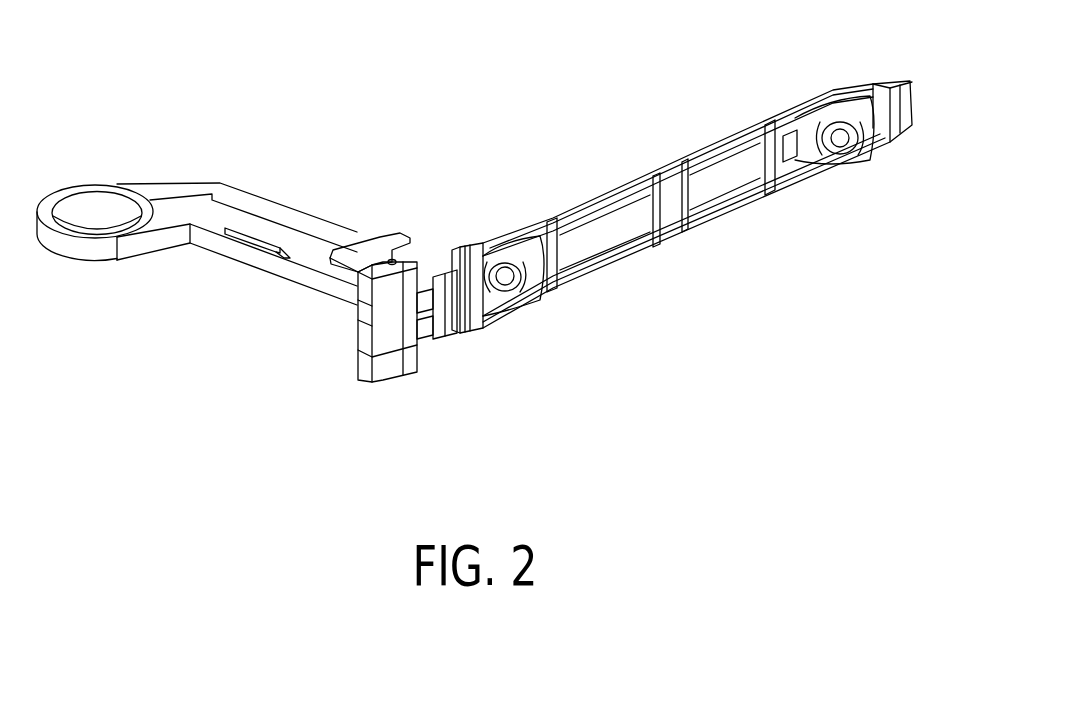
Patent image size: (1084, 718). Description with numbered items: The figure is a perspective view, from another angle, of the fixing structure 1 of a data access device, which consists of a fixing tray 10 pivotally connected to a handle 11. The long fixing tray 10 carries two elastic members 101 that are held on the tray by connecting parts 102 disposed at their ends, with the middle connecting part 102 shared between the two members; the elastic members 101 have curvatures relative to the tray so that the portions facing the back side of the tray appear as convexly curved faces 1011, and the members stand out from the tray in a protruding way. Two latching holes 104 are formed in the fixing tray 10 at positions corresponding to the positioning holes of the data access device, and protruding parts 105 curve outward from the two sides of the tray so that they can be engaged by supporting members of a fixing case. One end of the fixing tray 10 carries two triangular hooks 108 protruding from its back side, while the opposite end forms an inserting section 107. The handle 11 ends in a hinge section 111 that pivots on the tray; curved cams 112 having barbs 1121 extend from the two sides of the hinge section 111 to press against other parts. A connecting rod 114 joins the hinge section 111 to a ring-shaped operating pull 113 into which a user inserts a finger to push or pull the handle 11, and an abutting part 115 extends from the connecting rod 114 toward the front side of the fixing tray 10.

The fixing structure 1 is at (188, 95).
The fixing tray 10 is at (787, 187).
The elastic member 101 is at (697, 316).
The convexly curved face 1011 is at (623, 230).
The connecting part 102 is at (613, 207).
The latching hole 104 is at (520, 276).
The protruding part 105 is at (498, 237).
The inserting section 107 is at (903, 107).
The hook 108 is at (443, 337).
The handle 11 is at (287, 288).
The hinge section 111 is at (372, 258).
The cam 112 is at (397, 283).
The barb 1121 is at (358, 368).
The operating pull 113 is at (92, 204).
The connecting rod 114 is at (250, 255).
The abutting part 115 is at (290, 213).